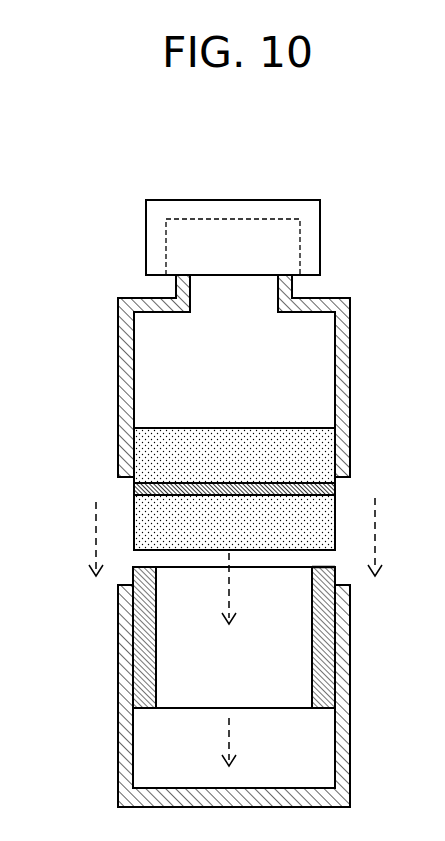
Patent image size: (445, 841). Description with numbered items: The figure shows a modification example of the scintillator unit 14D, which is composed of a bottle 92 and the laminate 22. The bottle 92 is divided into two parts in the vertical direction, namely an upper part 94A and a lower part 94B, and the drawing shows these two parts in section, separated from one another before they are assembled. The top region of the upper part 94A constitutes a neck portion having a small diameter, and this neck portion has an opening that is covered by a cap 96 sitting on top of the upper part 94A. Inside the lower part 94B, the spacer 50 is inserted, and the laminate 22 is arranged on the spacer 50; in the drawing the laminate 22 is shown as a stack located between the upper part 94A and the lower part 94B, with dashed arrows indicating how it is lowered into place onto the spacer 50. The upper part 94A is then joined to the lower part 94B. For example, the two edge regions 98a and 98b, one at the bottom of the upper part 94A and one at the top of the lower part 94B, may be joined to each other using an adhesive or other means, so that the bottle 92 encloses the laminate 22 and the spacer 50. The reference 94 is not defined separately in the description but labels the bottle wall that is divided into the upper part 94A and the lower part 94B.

The scintillator unit 14D is at (312, 186).
The bottle 92 is at (116, 259).
The container 94 is at (118, 300).
The upper part 94A is at (350, 365).
The lower part 94B is at (350, 682).
The cap 96 is at (321, 245).
The laminate 22 is at (168, 428).
The edge region 98a is at (340, 486).
The edge region 98b is at (340, 568).
The spacer 50 is at (337, 625).